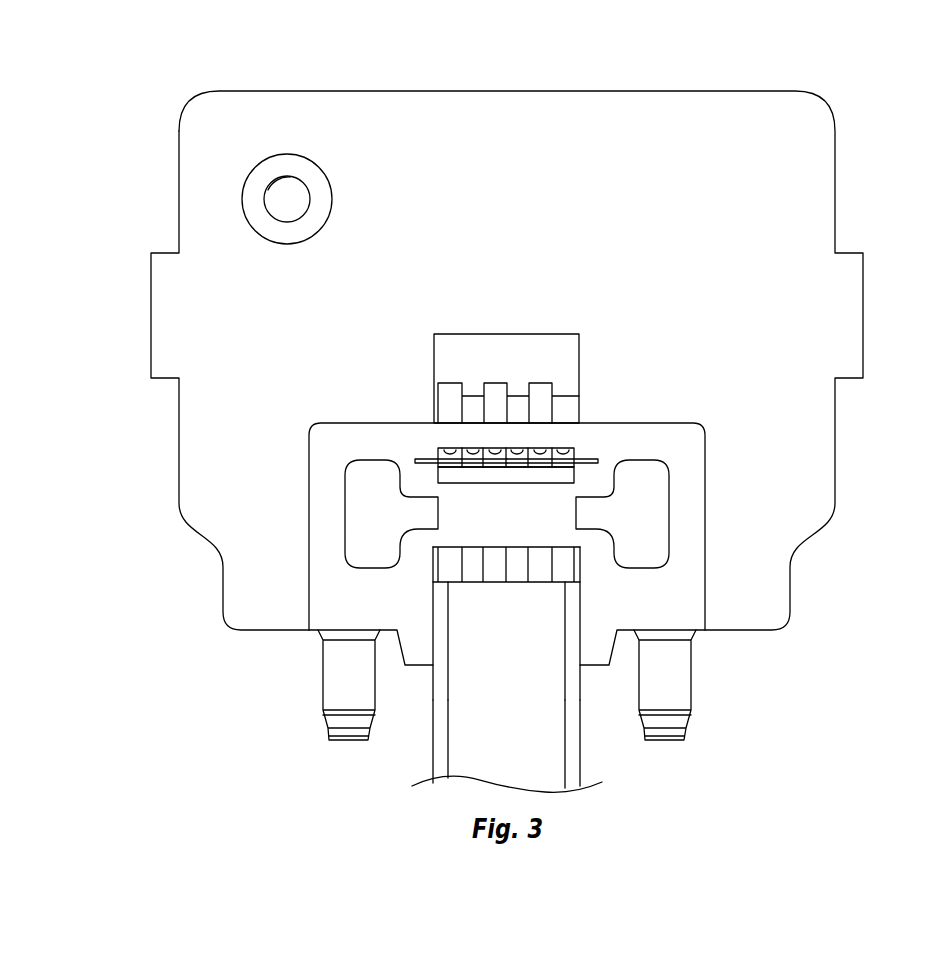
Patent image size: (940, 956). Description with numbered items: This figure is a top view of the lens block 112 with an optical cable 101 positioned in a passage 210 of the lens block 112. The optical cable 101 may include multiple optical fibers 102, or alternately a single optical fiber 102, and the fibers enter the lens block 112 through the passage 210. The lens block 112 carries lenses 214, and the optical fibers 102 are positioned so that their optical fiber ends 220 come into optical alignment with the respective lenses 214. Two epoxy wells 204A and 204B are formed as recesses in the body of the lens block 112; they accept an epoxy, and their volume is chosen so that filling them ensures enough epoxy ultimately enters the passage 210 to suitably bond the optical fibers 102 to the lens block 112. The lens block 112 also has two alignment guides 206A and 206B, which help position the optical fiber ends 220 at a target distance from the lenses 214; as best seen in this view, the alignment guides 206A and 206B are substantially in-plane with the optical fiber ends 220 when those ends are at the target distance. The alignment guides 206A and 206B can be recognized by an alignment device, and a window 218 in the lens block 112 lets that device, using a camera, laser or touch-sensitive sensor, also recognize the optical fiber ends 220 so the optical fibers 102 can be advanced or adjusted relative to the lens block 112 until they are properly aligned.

The lens block 112 is at (166, 90).
The optical fiber ends 220 is at (567, 450).
The lenses 214 is at (453, 448).
The window 218 is at (450, 458).
The alignment guide 206B is at (413, 461).
The alignment guide 206A is at (600, 461).
The epoxy well 204B is at (378, 494).
The epoxy well 204A is at (635, 494).
The passage 210 is at (473, 562).
The optical fibers 102 is at (567, 568).
The optical cable 101 is at (592, 757).